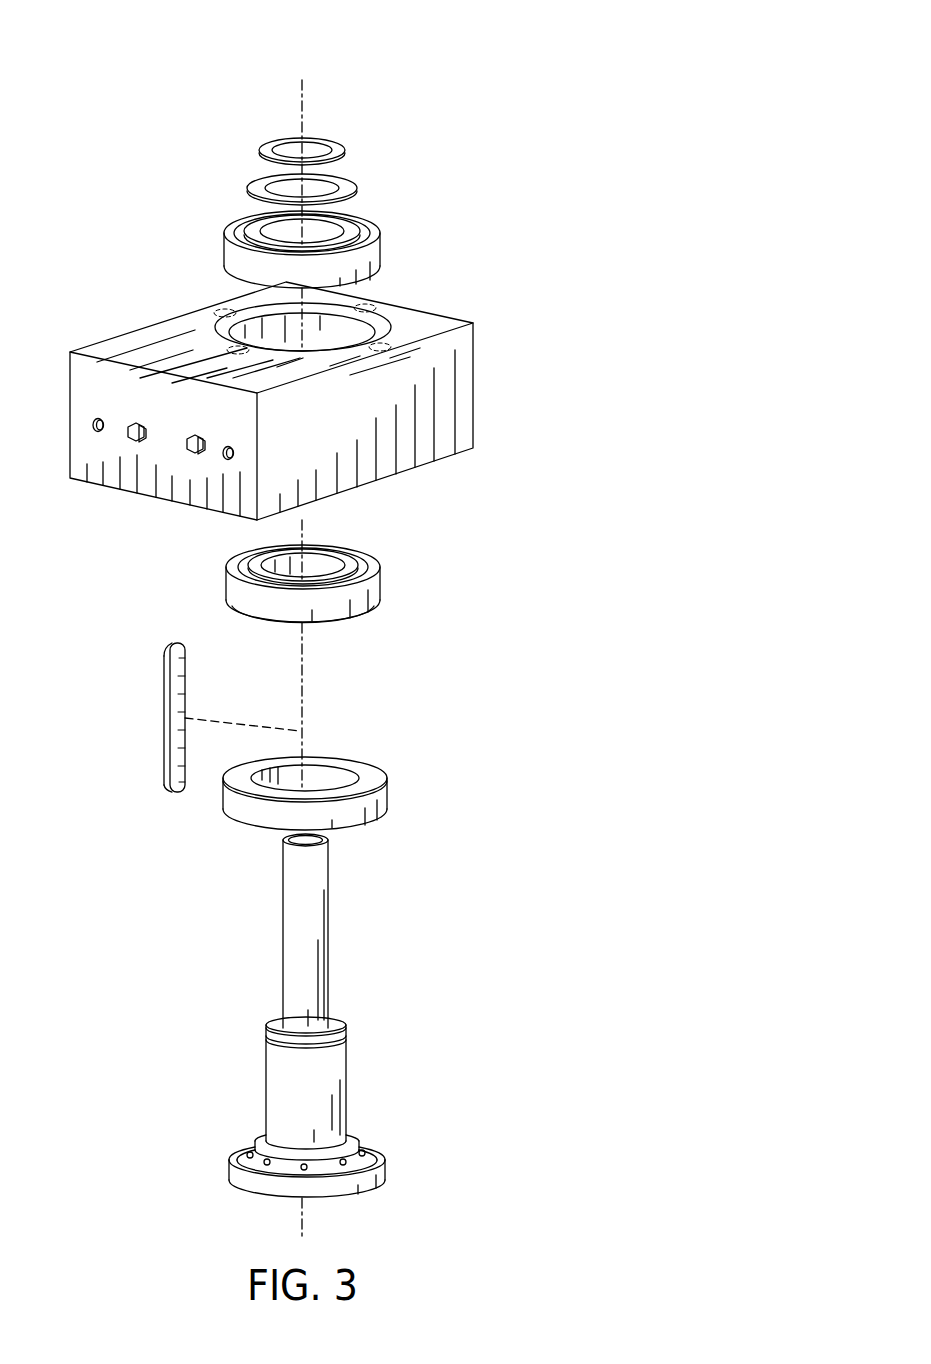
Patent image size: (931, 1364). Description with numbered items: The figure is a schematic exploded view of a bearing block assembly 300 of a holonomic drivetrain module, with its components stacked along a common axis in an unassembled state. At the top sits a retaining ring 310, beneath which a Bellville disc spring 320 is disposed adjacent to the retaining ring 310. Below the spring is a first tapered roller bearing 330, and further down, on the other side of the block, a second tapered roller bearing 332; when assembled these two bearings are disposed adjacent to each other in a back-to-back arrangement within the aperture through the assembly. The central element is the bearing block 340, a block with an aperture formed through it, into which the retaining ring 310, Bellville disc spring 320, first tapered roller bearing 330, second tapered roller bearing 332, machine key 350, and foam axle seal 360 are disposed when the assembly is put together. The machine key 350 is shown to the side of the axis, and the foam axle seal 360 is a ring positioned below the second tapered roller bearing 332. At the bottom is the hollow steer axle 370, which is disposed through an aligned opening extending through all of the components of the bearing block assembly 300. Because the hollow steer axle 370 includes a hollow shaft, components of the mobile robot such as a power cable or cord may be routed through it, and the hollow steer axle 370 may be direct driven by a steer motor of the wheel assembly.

The bearing block assembly 300 is at (708, 47).
The retaining ring 310 is at (355, 131).
The Bellville disc spring 320 is at (370, 178).
The first tapered roller bearing 330 is at (388, 230).
The second tapered roller bearing 332 is at (398, 562).
The bearing block 340 is at (473, 370).
The machine key 350 is at (167, 693).
The foam axle seal 360 is at (395, 760).
The hollow steer axle 370 is at (347, 1070).